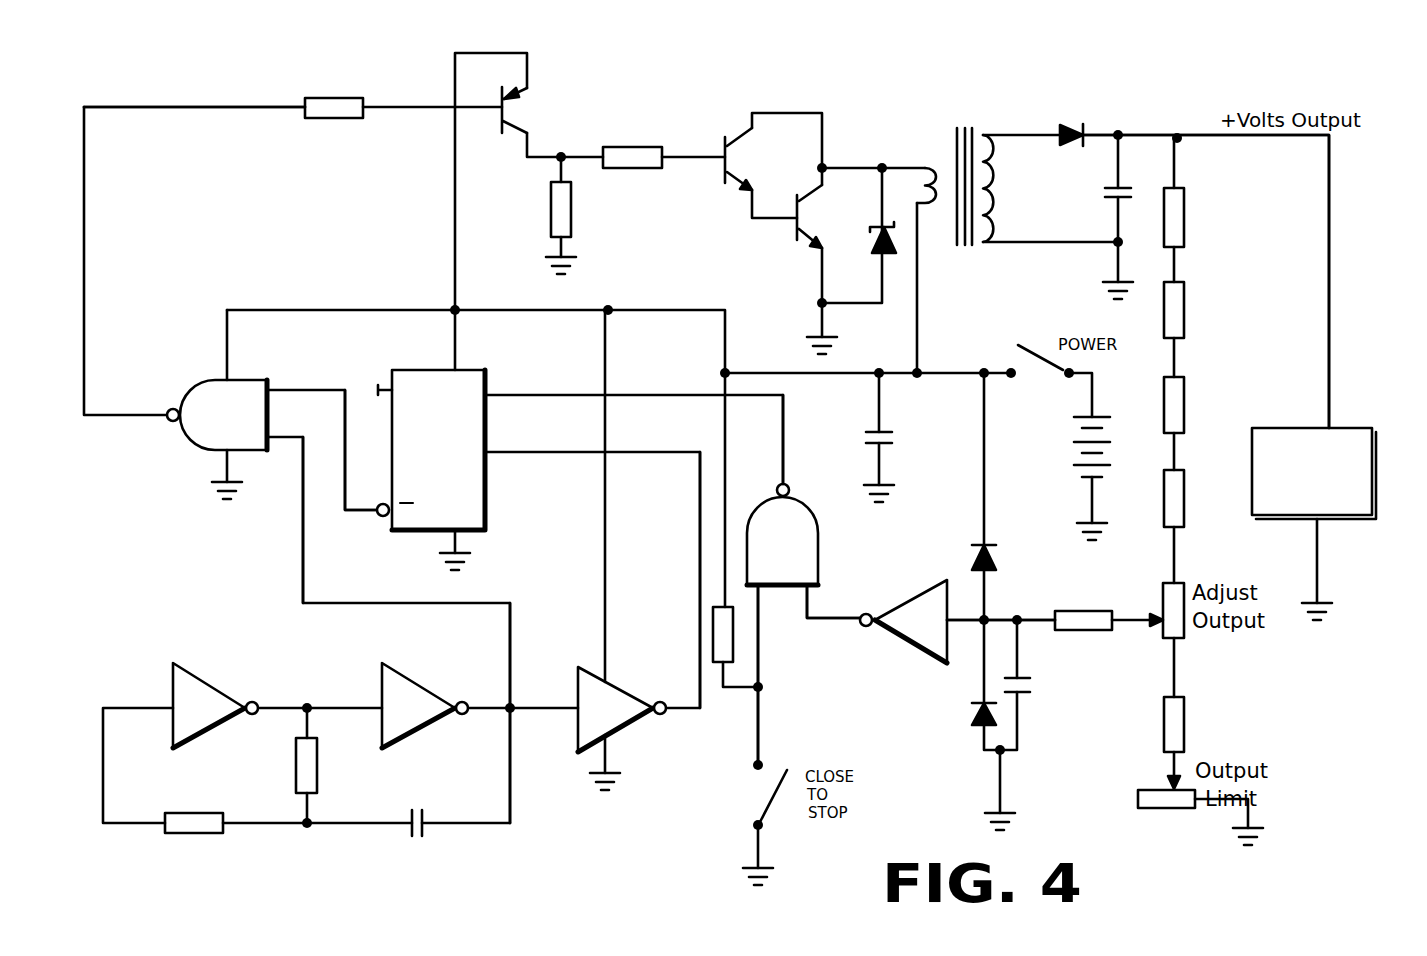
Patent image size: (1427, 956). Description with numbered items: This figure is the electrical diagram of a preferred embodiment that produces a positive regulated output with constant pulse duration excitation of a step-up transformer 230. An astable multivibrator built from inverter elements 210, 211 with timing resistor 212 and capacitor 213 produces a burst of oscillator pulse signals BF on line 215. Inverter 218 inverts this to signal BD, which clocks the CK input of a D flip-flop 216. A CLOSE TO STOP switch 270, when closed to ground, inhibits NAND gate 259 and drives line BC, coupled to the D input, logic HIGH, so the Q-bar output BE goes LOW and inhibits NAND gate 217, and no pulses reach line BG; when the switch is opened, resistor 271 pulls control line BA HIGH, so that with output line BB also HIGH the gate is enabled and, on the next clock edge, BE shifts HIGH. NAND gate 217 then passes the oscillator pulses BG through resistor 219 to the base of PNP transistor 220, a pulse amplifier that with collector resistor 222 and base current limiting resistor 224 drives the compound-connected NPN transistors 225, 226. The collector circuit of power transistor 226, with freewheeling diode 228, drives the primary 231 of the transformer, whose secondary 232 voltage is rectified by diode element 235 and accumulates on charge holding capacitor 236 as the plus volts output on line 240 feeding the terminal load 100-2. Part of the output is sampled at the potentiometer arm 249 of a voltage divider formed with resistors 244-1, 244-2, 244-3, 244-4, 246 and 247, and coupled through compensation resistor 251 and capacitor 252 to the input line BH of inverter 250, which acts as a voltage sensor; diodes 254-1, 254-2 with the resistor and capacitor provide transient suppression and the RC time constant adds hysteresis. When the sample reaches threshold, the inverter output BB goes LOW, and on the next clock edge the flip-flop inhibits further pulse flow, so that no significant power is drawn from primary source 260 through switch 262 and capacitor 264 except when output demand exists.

The resistor 219 is at (353, 97).
The PNP transistor 220 is at (500, 120).
The collector resistor 222 is at (568, 230).
The base current limiting resistor 224 is at (641, 150).
The NPN transistor 225 is at (725, 150).
The power transistor 226 is at (790, 237).
The freewheeling diode 228 is at (878, 250).
The step-up transformer 230 is at (957, 140).
The primary 231 is at (920, 170).
The secondary 232 is at (1003, 160).
The diode element 235 is at (1083, 128).
The charge holding capacitor 236 is at (1105, 197).
The output line 240 is at (1329, 228).
The resistor 244-1 is at (1184, 225).
The resistor 244-2 is at (1184, 330).
The resistor 244-3 is at (1182, 415).
The resistor 244-4 is at (1178, 518).
The arm 249 is at (1165, 610).
The resistor 247 is at (1178, 735).
The resistor 246 is at (1140, 800).
The terminal load 100-2 is at (1340, 455).
The power switch 262 is at (1050, 355).
The primary source 260 is at (1082, 437).
The capacitor 264 is at (891, 430).
The diode 254-1 is at (998, 545).
The diode 254-2 is at (975, 722).
The capacitor 252 is at (1020, 692).
The compensation resistor 251 is at (1078, 630).
The inverter 250 is at (910, 607).
The NAND gate 259 is at (800, 522).
The resistor 271 is at (720, 630).
The CLOSE TO STOP switch 270 is at (790, 772).
The NAND gate 217 is at (200, 412).
The D flip-flop 216 is at (420, 388).
The line 215 is at (521, 618).
The inverter element 210 is at (212, 705).
The inverter element 211 is at (412, 703).
The timing resistor 212 is at (313, 766).
The capacitor 213 is at (426, 816).
The inverter 218 is at (622, 705).
The line BG is at (195, 106).
The Q-bar output BE is at (362, 515).
The oscillator pulse signals BF is at (301, 568).
The line BC is at (784, 442).
The signal BD is at (675, 455).
The control line BA is at (760, 632).
The output line BB is at (815, 620).
The input line BH is at (997, 615).